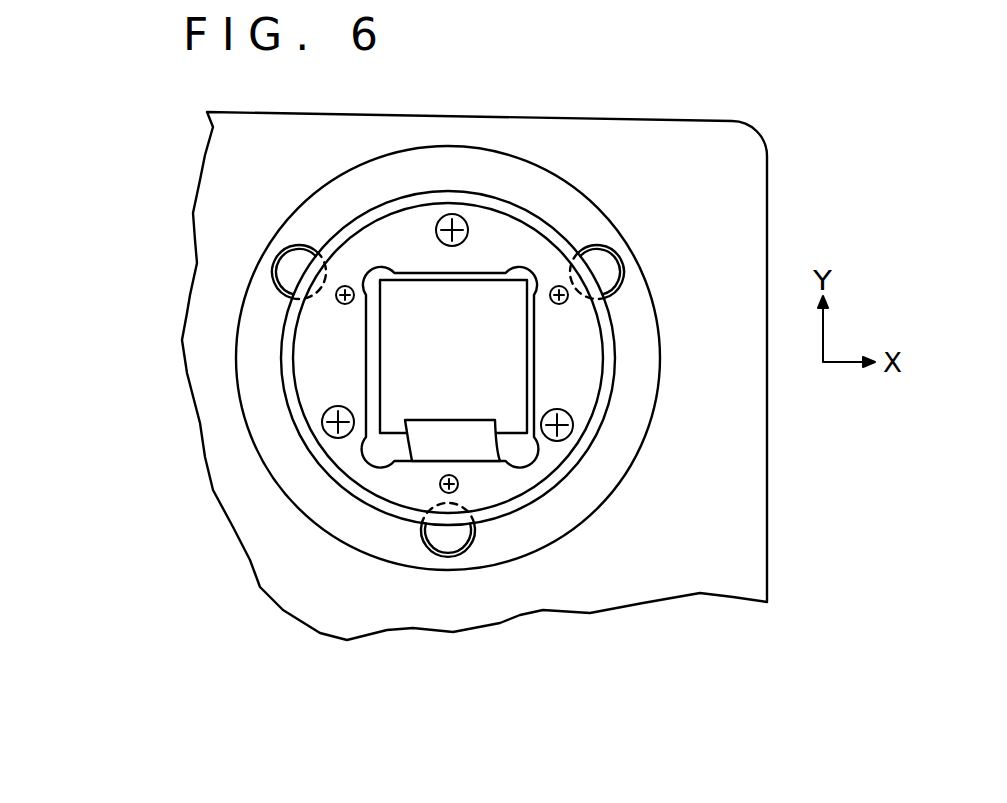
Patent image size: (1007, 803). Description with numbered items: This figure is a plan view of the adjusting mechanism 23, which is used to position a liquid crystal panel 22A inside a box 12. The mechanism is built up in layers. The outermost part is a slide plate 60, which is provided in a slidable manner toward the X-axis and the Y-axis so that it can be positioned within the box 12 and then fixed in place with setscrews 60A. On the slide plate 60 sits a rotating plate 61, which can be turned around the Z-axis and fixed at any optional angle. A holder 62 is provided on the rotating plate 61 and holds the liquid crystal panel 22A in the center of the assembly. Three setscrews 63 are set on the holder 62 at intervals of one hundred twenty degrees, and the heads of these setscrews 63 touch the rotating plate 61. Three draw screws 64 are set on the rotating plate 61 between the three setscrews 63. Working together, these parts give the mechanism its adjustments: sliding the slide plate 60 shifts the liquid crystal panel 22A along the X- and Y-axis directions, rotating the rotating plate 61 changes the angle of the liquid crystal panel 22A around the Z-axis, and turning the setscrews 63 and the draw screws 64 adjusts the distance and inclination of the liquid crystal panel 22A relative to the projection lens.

The box 12 is at (710, 587).
The adjusting mechanism 23 is at (170, 218).
The slide plate 60 is at (545, 527).
The setscrew 60A is at (433, 650).
The rotating plate 61 is at (565, 473).
The holder 62 is at (621, 303).
The setscrew 63 is at (336, 296).
The draw screw 64 is at (462, 216).
The liquid crystal panel 22A is at (480, 297).